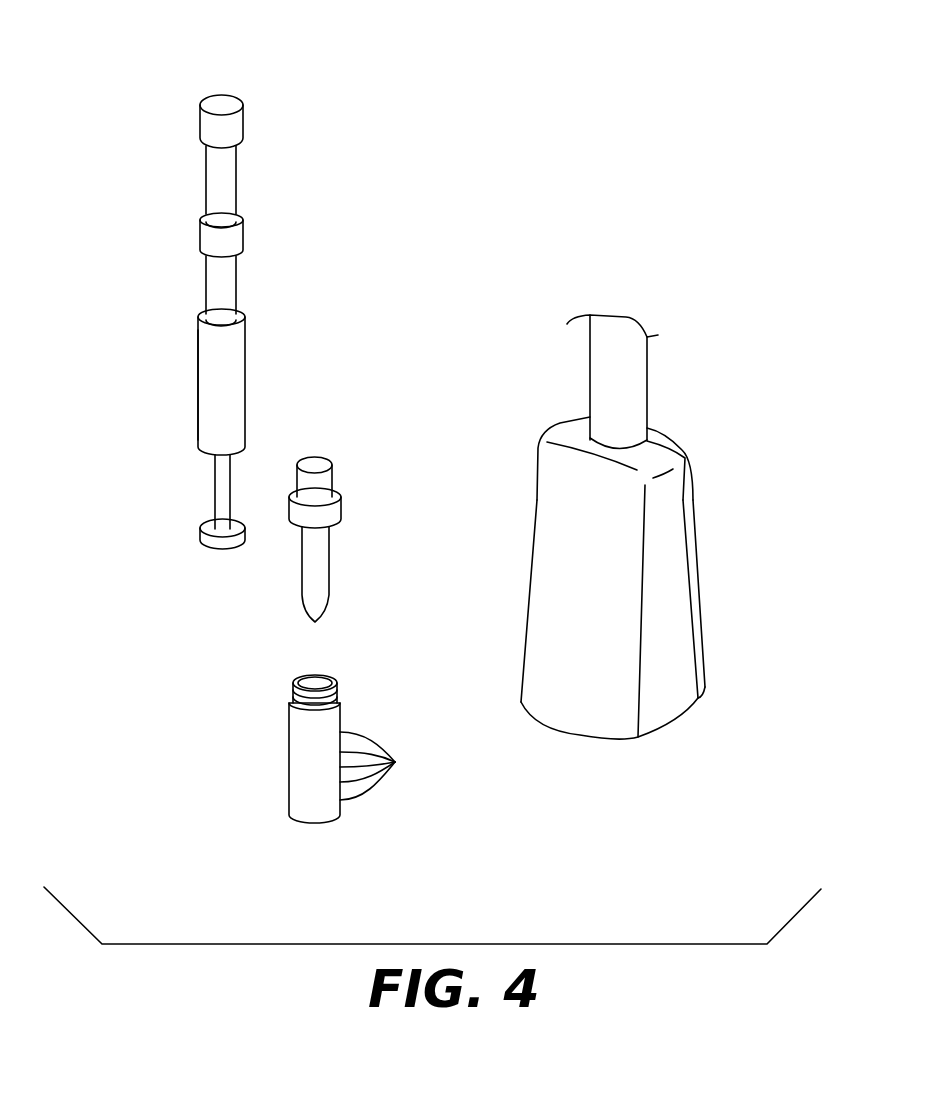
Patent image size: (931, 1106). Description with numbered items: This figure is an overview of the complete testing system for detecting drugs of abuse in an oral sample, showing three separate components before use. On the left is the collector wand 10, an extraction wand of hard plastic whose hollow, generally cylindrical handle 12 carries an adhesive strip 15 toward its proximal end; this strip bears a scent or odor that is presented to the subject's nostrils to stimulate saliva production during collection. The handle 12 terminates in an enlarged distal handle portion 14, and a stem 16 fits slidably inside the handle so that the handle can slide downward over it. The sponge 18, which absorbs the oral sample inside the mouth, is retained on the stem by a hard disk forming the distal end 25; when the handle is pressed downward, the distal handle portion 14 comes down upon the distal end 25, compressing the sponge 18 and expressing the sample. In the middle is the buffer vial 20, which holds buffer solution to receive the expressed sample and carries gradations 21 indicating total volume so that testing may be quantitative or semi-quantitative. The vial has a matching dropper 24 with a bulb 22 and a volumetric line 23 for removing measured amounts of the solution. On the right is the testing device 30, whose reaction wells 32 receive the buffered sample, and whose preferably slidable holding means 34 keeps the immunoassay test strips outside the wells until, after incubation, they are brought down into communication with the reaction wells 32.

The collector wand 10 is at (222, 81).
The handle 12 is at (237, 287).
The distal handle portion 14 is at (245, 385).
The adhesive strip 15 is at (242, 213).
The stem 16 is at (230, 493).
The sponge 18 is at (198, 440).
The buffer vial 20 is at (289, 752).
The gradations 21 is at (383, 766).
The bulb 22 is at (333, 465).
The volumetric line 23 is at (329, 573).
The dropper 24 is at (341, 508).
The distal end 25 is at (200, 528).
The testing device 30 is at (703, 597).
The reaction wells 32 is at (688, 487).
The holding means 34 is at (628, 328).